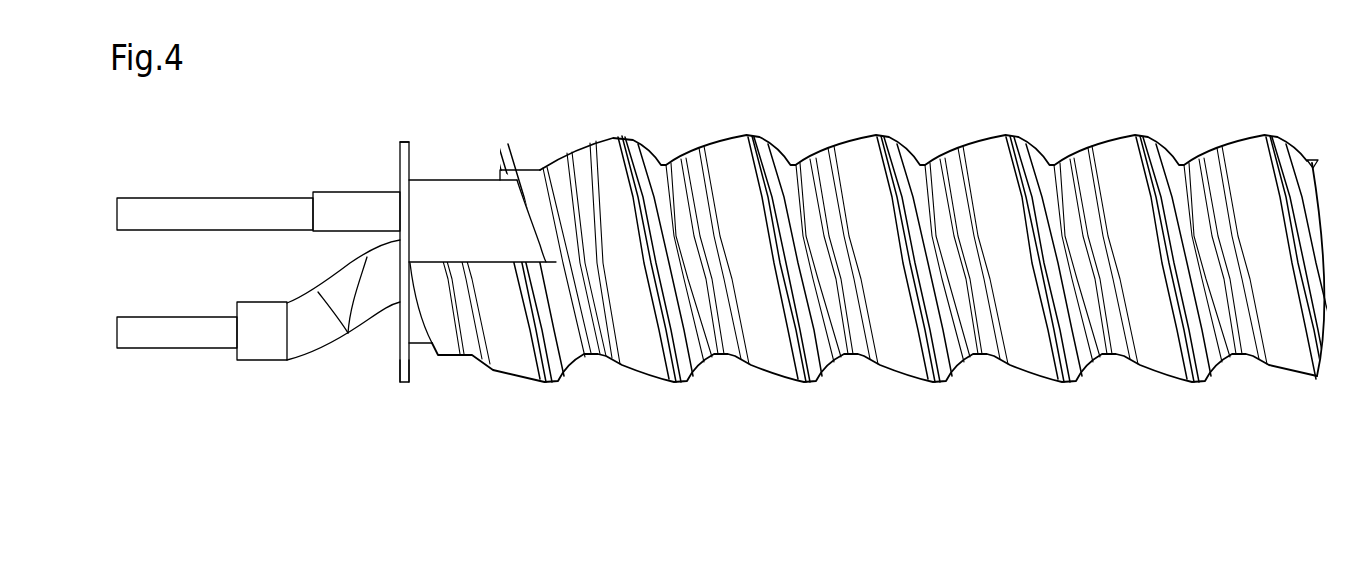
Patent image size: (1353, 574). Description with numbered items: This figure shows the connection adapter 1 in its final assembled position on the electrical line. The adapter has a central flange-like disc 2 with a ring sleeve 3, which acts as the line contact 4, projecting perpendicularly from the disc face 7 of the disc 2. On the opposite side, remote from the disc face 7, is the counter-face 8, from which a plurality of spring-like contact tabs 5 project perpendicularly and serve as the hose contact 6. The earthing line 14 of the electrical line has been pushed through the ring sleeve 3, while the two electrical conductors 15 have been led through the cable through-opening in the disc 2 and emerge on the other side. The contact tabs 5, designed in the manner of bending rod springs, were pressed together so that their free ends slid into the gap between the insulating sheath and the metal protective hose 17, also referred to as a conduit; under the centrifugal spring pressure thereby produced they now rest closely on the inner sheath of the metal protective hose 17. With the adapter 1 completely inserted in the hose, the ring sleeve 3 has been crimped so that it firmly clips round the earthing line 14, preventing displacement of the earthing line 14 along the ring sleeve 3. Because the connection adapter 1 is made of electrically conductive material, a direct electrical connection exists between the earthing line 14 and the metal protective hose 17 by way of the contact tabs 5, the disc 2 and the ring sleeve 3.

The connection adapter 1 is at (453, 249).
The central flange-like disc 2 is at (407, 384).
The ring sleeve 3 is at (341, 207).
The line contact 4 is at (383, 147).
The contact tabs 5 is at (475, 190).
The hose contact 6 is at (496, 150).
The disc face 7 is at (397, 371).
The counter-face 8 is at (412, 371).
The earthing line 14 is at (257, 212).
The electrical conductors 15 is at (177, 332).
The metal protective hose 17 is at (853, 165).